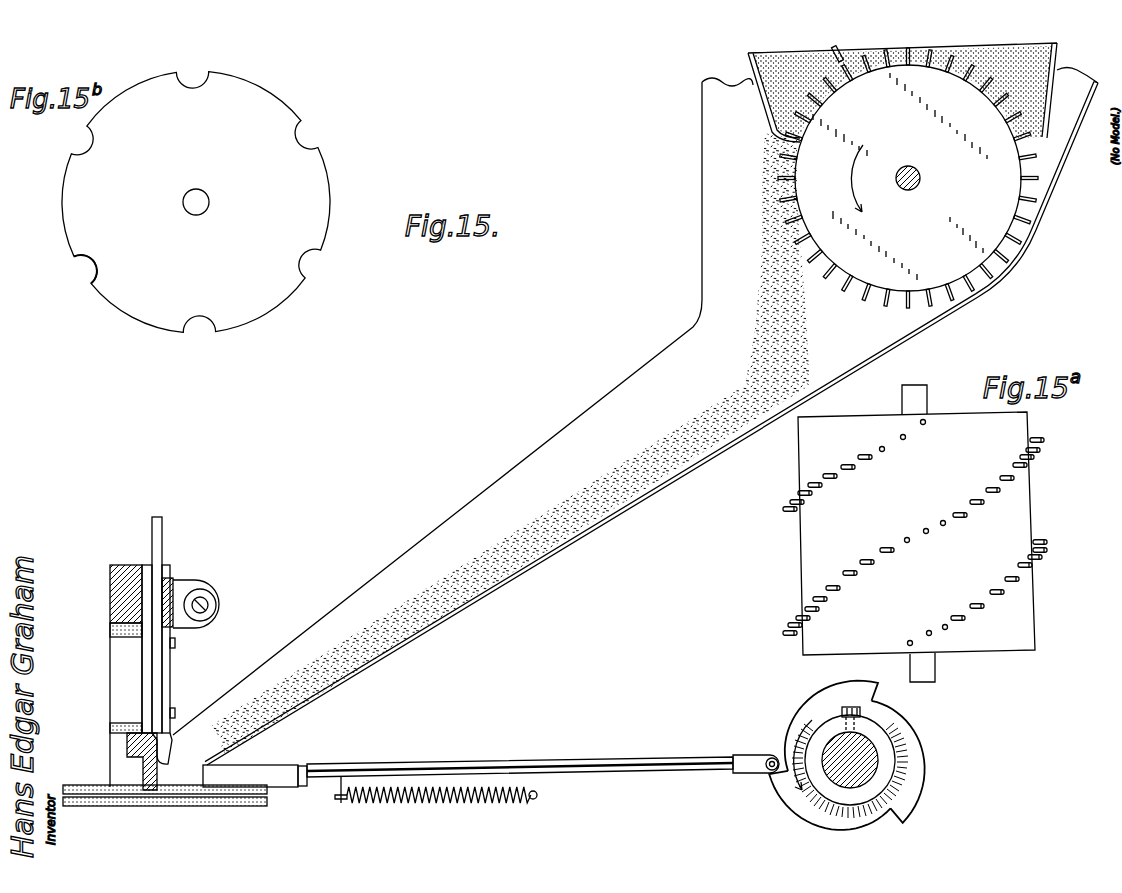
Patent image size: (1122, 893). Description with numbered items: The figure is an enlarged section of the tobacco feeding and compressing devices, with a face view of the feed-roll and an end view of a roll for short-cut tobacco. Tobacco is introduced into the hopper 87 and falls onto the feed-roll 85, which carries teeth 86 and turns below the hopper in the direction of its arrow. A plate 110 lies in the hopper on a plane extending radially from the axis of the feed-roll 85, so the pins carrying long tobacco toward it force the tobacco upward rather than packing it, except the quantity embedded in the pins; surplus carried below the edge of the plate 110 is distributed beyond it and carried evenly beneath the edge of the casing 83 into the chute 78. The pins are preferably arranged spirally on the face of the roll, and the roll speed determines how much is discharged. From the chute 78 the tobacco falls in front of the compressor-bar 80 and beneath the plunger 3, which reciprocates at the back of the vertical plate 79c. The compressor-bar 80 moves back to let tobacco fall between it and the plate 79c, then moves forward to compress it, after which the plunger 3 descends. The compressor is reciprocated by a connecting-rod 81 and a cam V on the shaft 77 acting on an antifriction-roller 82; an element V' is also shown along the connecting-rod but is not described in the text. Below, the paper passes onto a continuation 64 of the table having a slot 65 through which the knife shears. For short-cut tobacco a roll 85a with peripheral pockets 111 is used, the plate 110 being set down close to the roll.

In FIG. 15, the plunger 3 is at (170, 748).
In FIG. 15, the continuation of the table 64 is at (267, 793).
In FIG. 15, the slot 65 is at (143, 806).
In FIG. 15, the shaft 77 is at (864, 760).
In FIG. 15, the chute 78 is at (497, 590).
In FIG. 15, the vertical plate 79c is at (127, 746).
In FIG. 15, the compressor-bar 80 is at (282, 766).
In FIG. 15, the connecting-rod 81 is at (522, 765).
In FIG. 15, the antifriction-roller 82 is at (772, 752).
In FIG. 15, the casing 83 is at (1037, 190).
In FIG. 15, the feed-roll 85 is at (908, 178).
In FIG. 15A, the feed-roll 85 is at (916, 533).
In FIG. 15B, the roll for short-cut tobacco 85a is at (196, 202).
In FIG. 15, the teeth 86 is at (990, 288).
In FIG. 15A, the teeth 86 is at (784, 506).
In FIG. 15, the hopper 87 is at (1057, 52).
In FIG. 15, the plate 110 is at (833, 57).
In FIG. 15B, the peripheral pockets 111 is at (92, 259).
In FIG. 15, the cam V is at (828, 676).
In FIG. 15, the spring V' is at (436, 801).